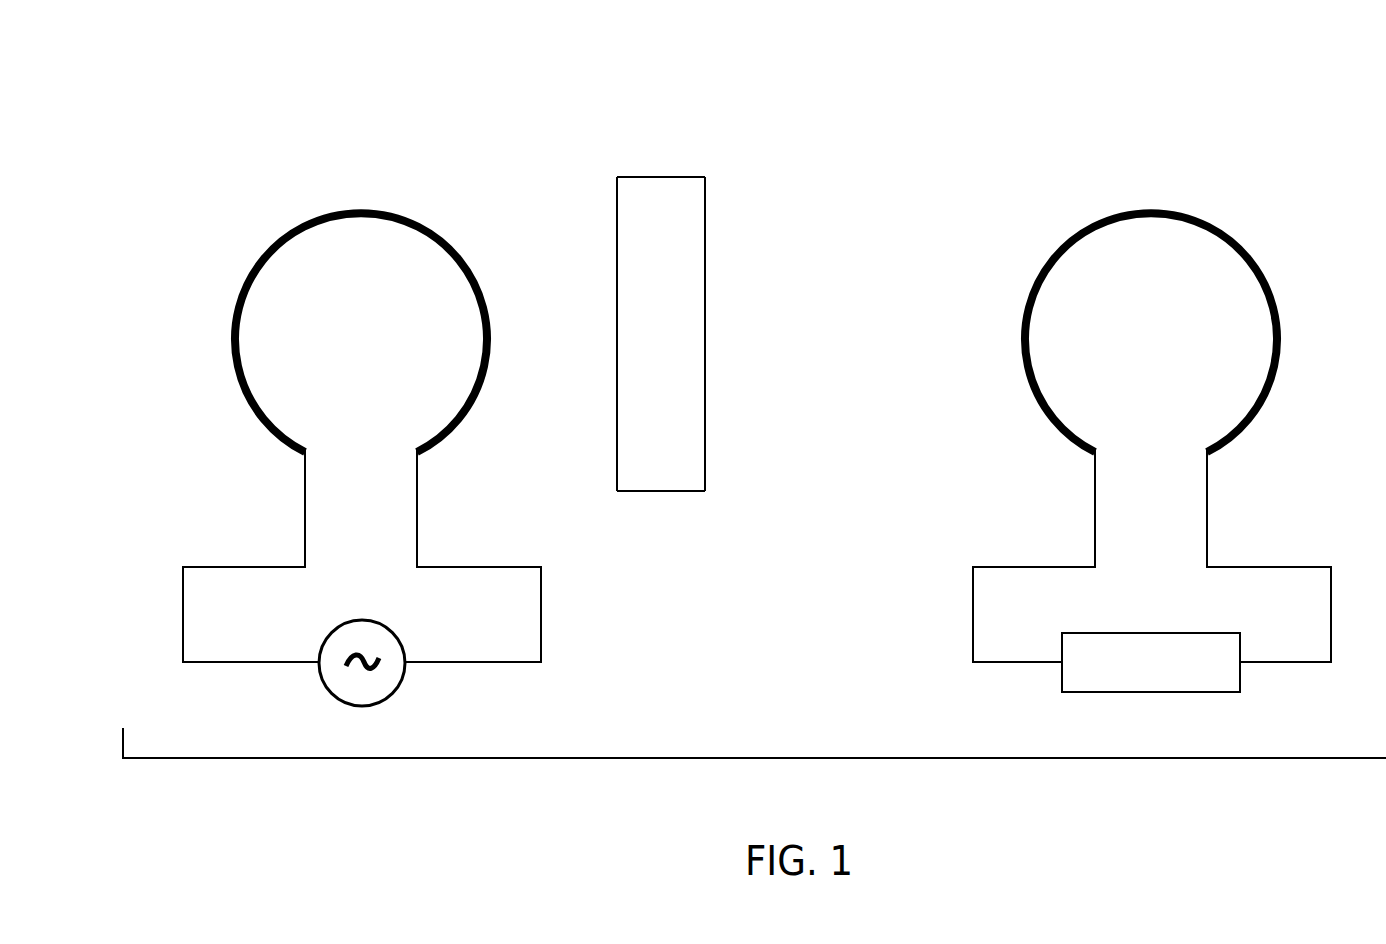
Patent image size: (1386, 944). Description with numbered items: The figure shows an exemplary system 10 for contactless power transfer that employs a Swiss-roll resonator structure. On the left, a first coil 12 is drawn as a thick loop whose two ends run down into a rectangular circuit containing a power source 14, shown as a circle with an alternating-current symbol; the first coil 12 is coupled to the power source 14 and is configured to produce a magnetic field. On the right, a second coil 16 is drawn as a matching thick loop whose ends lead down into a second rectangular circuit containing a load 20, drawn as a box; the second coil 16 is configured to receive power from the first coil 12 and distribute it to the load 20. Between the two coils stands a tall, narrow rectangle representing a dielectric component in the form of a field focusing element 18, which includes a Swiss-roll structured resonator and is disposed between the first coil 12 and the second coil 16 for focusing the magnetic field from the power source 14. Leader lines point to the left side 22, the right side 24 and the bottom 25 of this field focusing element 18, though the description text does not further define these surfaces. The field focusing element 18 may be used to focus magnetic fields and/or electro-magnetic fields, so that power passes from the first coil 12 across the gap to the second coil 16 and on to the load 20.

The system 10 is at (260, 68).
The first coil 12 is at (452, 240).
The power source 14 is at (322, 640).
The second coil 16 is at (1262, 264).
The field focusing element 18 is at (662, 177).
The load 20 is at (1062, 643).
The first side surface of structure 22 is at (617, 400).
The second side surface of structure 24 is at (705, 360).
The bottom surface of structure 25 is at (683, 492).